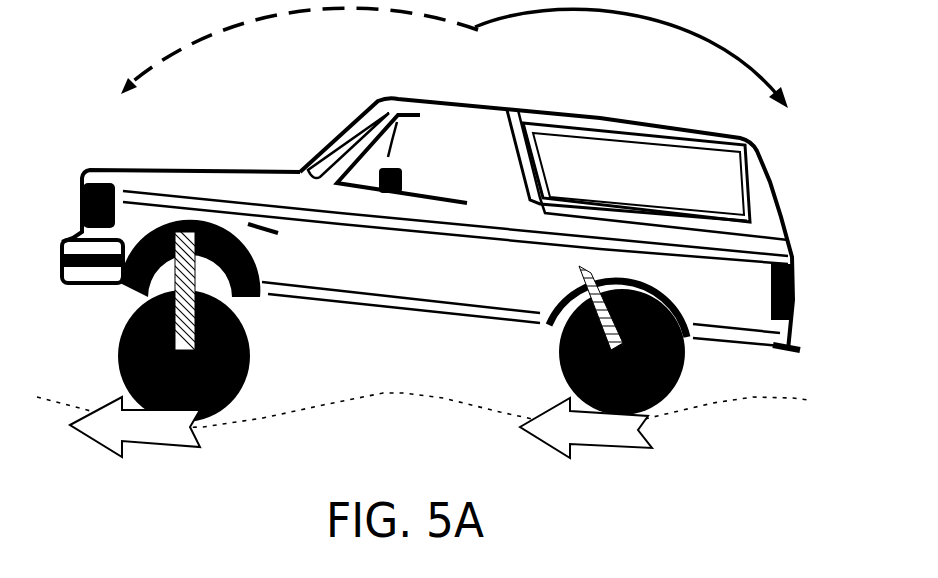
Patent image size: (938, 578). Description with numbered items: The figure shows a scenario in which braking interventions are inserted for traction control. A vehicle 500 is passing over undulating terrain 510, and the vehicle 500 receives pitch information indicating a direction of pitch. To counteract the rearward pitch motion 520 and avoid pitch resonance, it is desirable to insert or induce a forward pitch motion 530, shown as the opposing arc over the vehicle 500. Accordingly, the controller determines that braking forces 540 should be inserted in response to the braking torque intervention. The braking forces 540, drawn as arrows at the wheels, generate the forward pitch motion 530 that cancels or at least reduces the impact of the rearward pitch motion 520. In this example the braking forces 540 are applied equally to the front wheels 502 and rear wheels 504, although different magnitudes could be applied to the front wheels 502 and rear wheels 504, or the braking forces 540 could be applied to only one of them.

The vehicle 500 is at (753, 193).
The front wheels 502 is at (250, 353).
The rear wheels 504 is at (556, 356).
The undulating terrain 510 is at (728, 398).
The rearward pitch motion 520 is at (605, 12).
The forward pitch motion 530 is at (250, 20).
The braking forces 540 is at (132, 442).